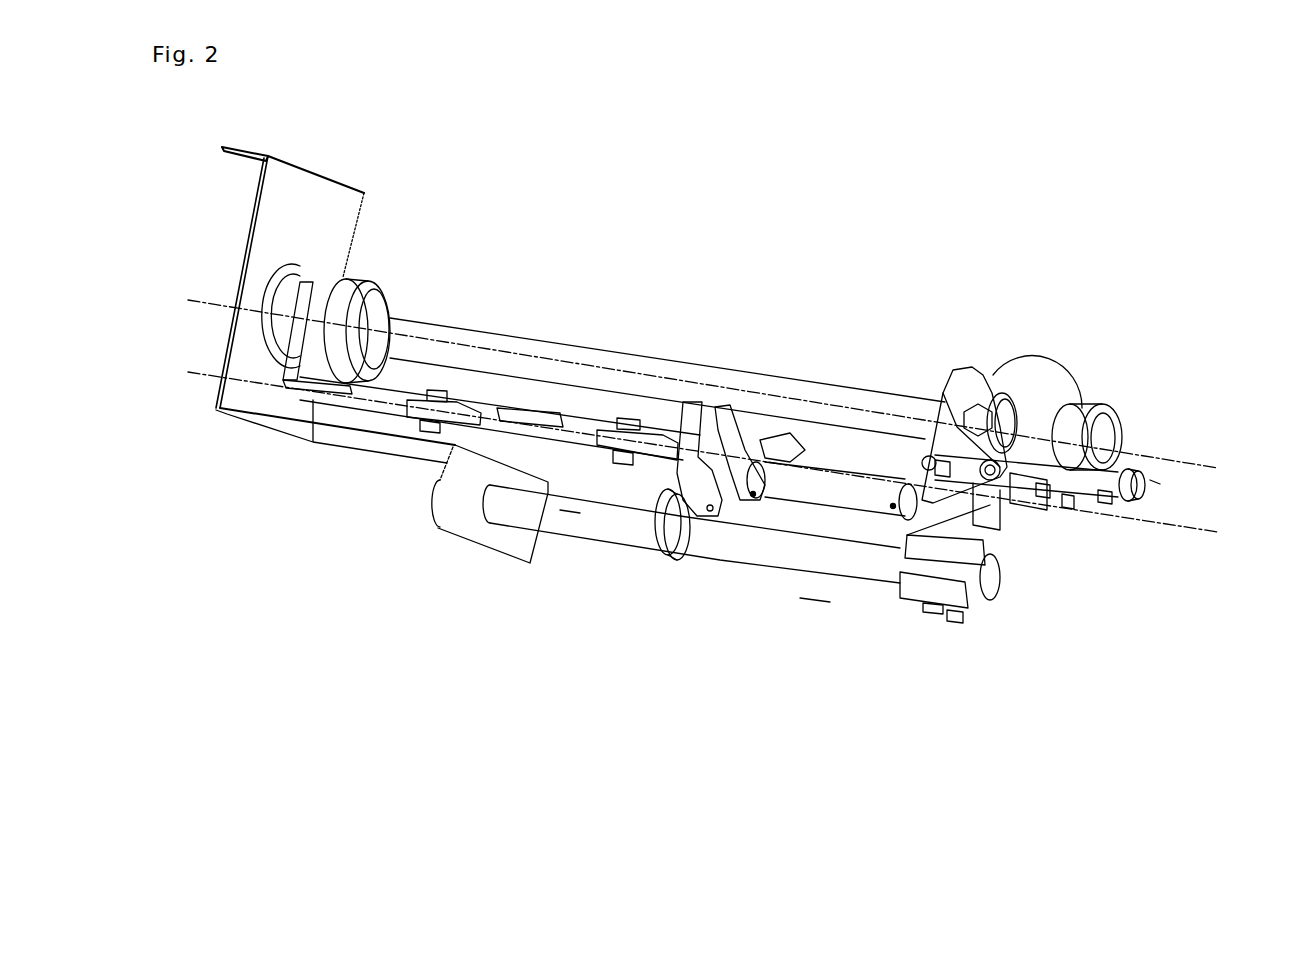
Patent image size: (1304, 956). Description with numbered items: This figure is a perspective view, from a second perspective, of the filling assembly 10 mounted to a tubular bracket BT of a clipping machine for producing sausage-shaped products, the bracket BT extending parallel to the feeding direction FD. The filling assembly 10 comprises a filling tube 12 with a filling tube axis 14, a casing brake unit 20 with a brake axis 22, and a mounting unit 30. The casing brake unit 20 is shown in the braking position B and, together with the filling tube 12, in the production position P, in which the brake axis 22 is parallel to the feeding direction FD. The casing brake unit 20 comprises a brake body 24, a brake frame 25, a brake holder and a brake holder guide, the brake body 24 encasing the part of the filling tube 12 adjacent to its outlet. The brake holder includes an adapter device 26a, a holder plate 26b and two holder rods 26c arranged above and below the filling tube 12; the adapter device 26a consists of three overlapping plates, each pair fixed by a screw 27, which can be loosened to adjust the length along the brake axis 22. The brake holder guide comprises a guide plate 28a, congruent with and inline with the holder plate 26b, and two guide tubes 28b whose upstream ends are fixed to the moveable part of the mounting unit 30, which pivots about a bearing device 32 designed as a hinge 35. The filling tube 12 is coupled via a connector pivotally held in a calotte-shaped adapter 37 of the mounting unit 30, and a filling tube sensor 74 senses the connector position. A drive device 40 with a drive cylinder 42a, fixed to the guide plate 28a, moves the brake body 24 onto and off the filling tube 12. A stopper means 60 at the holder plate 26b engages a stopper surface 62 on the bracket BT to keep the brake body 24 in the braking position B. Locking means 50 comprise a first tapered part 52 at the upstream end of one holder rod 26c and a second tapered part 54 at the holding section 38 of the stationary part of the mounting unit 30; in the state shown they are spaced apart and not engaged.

The filling assembly 10 is at (324, 600).
The filling tube 12 is at (632, 362).
The filling tube axis 14 is at (1185, 457).
The casing brake unit 20 is at (358, 507).
The brake axis 22 is at (1165, 520).
The brake body 24 is at (373, 303).
The brake frame 25 is at (303, 355).
The adapter device 26a is at (527, 425).
The holder plate 26b is at (692, 433).
The holder rods 26c is at (1078, 480).
The screw 27 is at (437, 393).
The guide plate 28a is at (735, 450).
The guide tubes 28b is at (813, 435).
The mounting unit 30 is at (1012, 321).
The bearing device 32 is at (978, 413).
The hinge 35 is at (1010, 284).
The calotte-shaped adapter 37 is at (1043, 410).
The holding section 38 is at (1029, 417).
The drive device 40 is at (784, 380).
The drive cylinder 42a is at (835, 492).
The locking means 50 is at (1113, 594).
The first tapered part 52 is at (1135, 488).
The second tapered part 54 is at (1008, 490).
The stopper means 60 is at (690, 545).
The stopper surface 62 is at (666, 512).
The filling tube sensor 74 is at (925, 470).
The braking position B is at (226, 445).
The bracket BT is at (568, 525).
The production position P is at (817, 621).
The feeding direction FD is at (1173, 485).